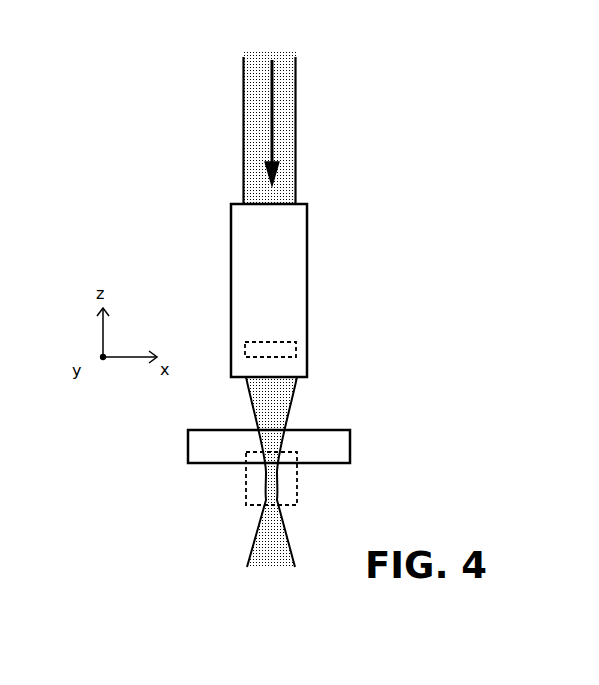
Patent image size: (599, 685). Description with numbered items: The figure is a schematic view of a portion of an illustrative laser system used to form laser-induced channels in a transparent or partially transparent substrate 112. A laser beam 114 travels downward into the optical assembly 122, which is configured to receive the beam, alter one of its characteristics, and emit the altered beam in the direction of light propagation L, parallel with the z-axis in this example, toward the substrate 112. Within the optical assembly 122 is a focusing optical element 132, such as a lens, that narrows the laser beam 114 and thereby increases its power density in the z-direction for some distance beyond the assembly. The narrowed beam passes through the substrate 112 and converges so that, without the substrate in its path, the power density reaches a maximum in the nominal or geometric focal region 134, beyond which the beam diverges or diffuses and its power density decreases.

The laser beam 114 is at (287, 120).
The direction of light propagation L is at (270, 90).
The optical assembly 122 is at (242, 233).
The focusing optical element 132 is at (295, 353).
The substrate 112 is at (345, 443).
The focal region 134 is at (250, 503).